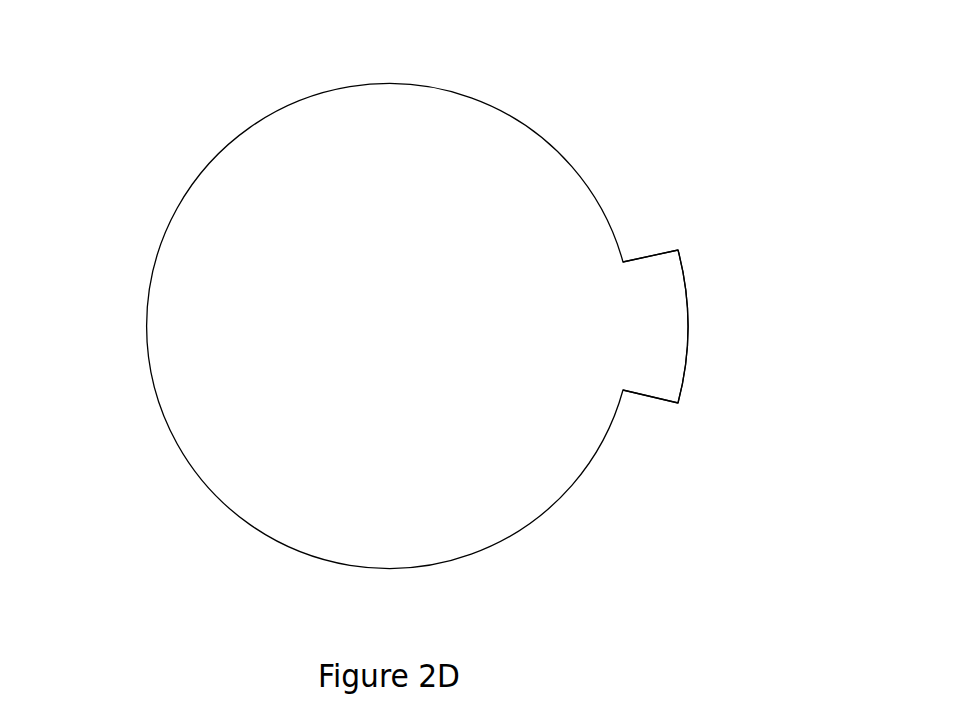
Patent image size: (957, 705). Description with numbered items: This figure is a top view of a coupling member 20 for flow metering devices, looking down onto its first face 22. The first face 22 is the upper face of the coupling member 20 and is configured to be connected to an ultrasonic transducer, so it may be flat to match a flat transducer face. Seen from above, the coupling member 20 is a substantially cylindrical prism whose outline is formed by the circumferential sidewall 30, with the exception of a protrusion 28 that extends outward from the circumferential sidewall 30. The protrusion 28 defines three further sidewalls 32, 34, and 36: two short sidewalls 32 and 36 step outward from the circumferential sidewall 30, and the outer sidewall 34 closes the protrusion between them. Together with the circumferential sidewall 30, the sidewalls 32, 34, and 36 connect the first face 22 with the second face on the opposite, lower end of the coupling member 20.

The coupling member 20 is at (99, 52).
The first face 22 is at (318, 408).
The protrusion 28 is at (660, 322).
The circumferential sidewall 30 is at (157, 257).
The sidewall 32 is at (655, 398).
The sidewall 34 is at (688, 345).
The sidewall 36 is at (643, 252).